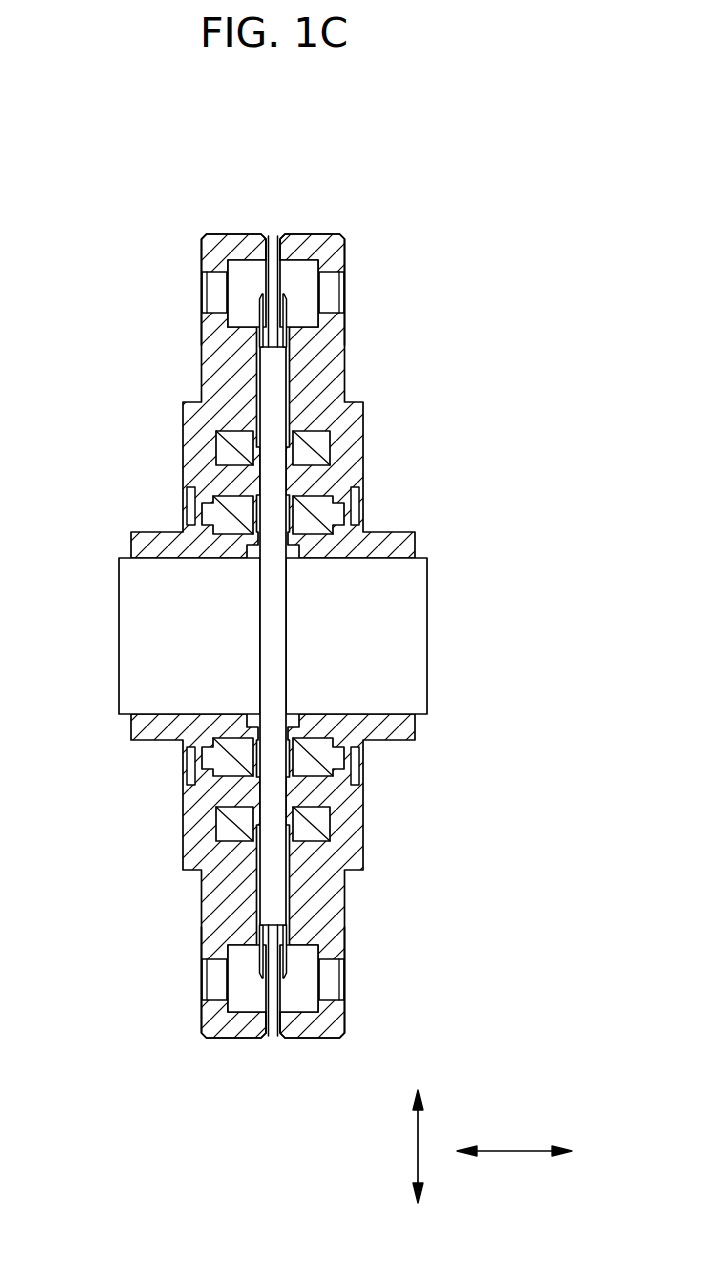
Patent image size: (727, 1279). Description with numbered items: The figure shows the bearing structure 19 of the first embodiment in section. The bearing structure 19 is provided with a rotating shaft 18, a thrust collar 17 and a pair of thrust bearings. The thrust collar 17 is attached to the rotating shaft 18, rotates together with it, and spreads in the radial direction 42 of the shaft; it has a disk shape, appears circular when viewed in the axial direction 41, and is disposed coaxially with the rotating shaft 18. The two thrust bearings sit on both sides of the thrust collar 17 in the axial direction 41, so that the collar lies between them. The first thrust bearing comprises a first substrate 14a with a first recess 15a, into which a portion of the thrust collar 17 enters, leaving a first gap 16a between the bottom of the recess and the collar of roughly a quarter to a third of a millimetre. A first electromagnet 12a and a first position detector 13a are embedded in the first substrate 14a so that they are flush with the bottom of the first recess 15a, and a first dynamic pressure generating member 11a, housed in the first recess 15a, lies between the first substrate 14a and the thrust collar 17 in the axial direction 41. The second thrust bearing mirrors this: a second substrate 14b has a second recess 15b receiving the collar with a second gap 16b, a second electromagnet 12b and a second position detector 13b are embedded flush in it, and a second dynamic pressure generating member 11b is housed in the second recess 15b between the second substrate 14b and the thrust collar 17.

The first dynamic pressure generating member 11a is at (253, 367).
The second dynamic pressure generating member 11b is at (294, 378).
The first electromagnet 12a is at (232, 446).
The second electromagnet 12b is at (312, 445).
The first position detector 13a is at (232, 516).
The second position detector 13b is at (313, 516).
The first substrate 14a is at (231, 244).
The second substrate 14b is at (312, 244).
The first recess 15a is at (268, 928).
The second recess 15b is at (278, 928).
The first gap 16a is at (238, 892).
The second gap 16b is at (308, 892).
The thrust collar 17 is at (277, 615).
The rotating shaft 18 is at (170, 612).
The bearing structure 19 is at (408, 150).
The axial direction 41 is at (514, 1150).
The radial direction 42 is at (418, 1147).